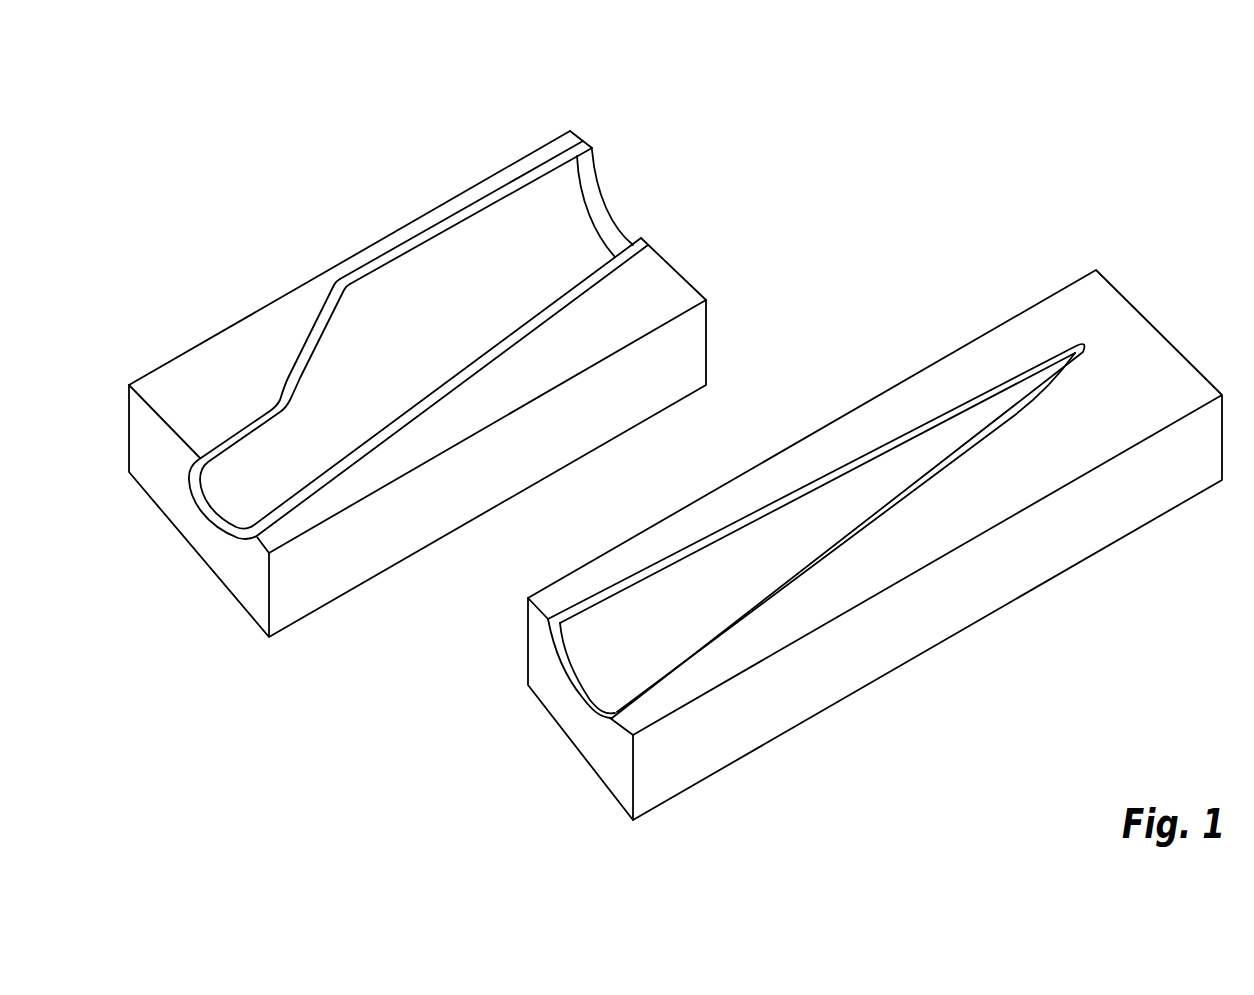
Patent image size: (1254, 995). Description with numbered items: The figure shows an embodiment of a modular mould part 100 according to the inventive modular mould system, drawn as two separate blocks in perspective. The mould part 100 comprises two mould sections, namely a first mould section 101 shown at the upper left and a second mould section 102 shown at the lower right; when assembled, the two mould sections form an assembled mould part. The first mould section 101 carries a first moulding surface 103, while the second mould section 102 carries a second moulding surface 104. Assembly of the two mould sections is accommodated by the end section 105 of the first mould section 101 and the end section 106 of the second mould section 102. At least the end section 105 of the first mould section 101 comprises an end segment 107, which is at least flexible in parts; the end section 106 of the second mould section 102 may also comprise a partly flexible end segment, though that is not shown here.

The mould part 100 is at (1056, 128).
The first mould section 101 is at (657, 303).
The second mould section 102 is at (887, 407).
The first moulding surface 103 is at (425, 342).
The second moulding surface 104 is at (698, 598).
The end section 105 is at (594, 150).
The end section 106 is at (555, 688).
The end segment 107 is at (588, 178).